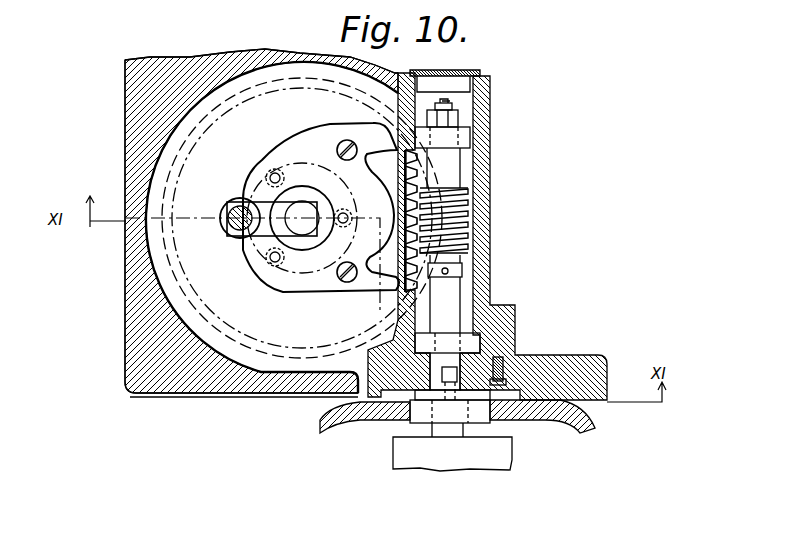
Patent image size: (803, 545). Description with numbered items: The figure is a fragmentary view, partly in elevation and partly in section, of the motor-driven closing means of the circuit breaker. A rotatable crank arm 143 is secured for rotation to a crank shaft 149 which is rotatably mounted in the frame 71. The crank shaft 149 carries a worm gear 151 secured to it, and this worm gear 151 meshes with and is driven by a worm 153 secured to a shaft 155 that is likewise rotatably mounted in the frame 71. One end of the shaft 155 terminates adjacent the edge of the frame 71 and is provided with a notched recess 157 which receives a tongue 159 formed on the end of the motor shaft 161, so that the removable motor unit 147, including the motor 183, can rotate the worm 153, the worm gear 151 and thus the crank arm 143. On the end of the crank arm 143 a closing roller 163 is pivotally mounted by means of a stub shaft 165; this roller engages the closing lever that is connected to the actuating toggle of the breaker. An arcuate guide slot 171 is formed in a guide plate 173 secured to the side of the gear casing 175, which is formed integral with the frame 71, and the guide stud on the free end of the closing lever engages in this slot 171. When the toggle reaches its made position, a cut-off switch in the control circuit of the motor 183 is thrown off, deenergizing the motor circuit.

The frame 71 is at (596, 370).
The crank arm 143 is at (270, 207).
The removable motor unit 147 is at (576, 421).
The crank shaft 149 is at (292, 204).
The worm gear 151 is at (256, 335).
The worm 153 is at (465, 216).
The shaft 155 is at (450, 292).
The notched recess 157 is at (462, 364).
The tongue 159 is at (450, 370).
The motor shaft 161 is at (443, 428).
The closing roller 163 is at (238, 231).
The stub shaft 165 is at (236, 209).
The arcuate guide slot 171 is at (387, 278).
The guide plate 173 is at (311, 272).
The gear casing 175 is at (210, 318).
The motor 183 is at (505, 450).